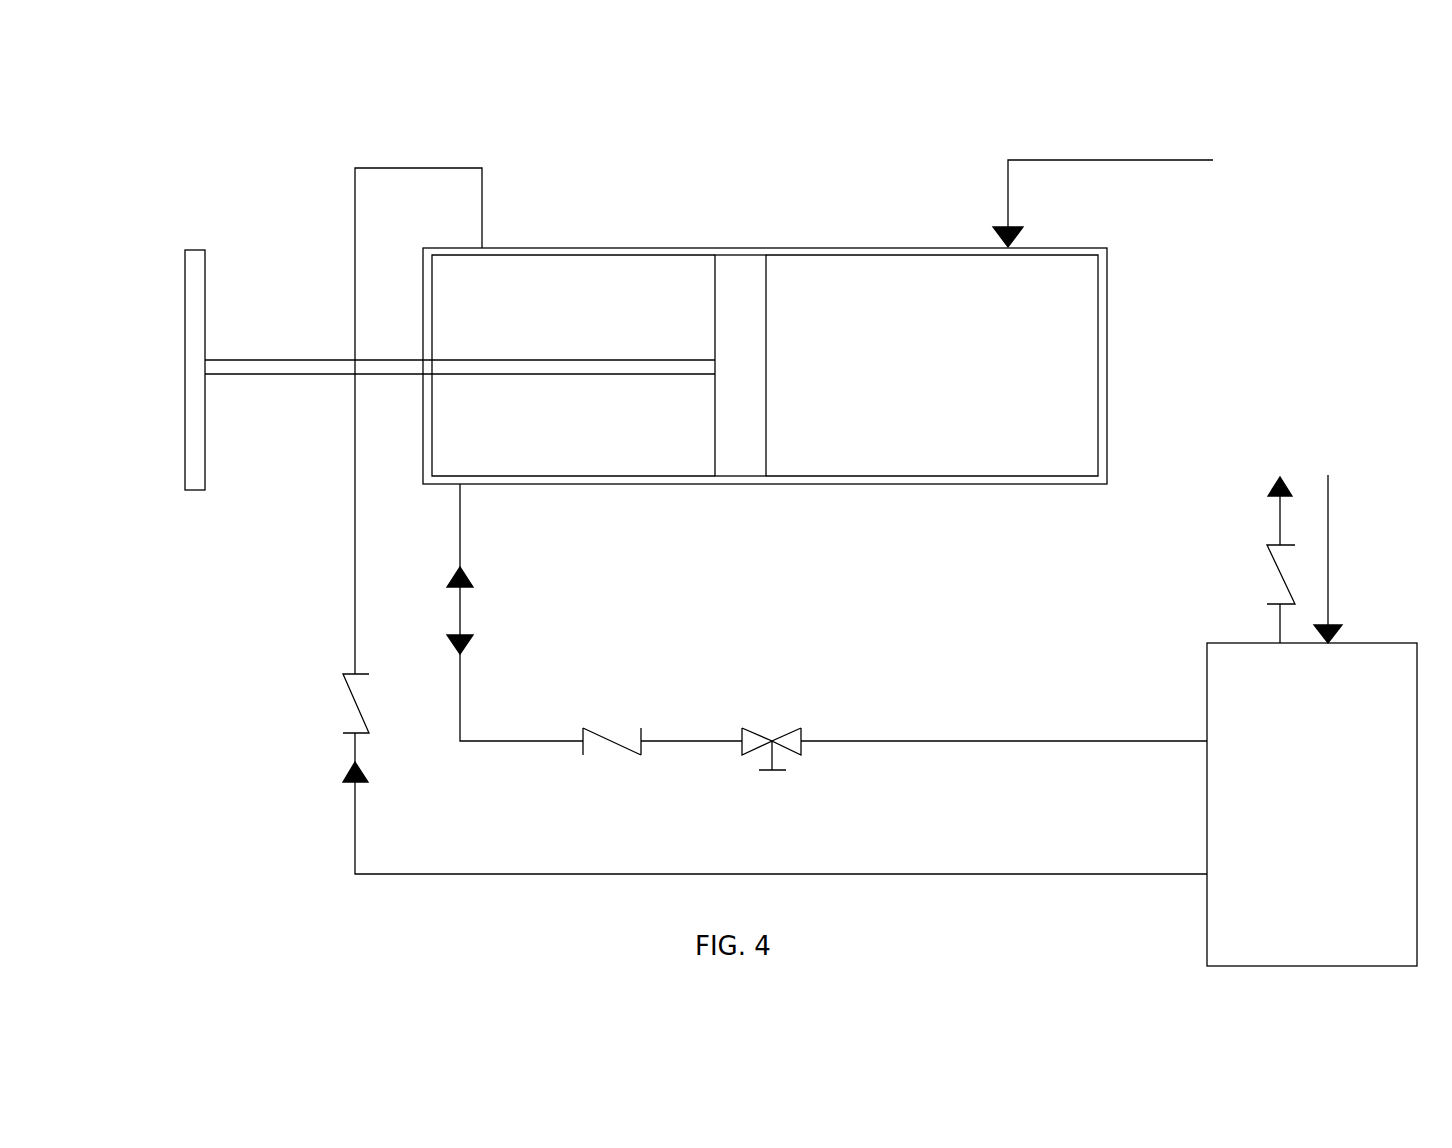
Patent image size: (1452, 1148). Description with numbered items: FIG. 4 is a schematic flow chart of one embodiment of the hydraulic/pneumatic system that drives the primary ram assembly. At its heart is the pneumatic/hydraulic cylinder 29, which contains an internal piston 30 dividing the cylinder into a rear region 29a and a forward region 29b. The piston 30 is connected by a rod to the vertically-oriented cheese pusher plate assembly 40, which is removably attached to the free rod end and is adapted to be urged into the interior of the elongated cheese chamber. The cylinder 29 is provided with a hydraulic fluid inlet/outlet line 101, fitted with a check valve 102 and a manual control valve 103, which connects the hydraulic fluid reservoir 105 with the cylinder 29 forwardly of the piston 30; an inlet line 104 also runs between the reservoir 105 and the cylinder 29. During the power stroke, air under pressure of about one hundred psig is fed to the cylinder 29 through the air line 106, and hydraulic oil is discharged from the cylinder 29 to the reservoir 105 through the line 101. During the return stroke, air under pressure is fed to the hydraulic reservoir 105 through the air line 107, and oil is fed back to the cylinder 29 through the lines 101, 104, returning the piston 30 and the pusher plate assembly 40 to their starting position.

The pneumatic/hydraulic cylinder 29 is at (787, 246).
The first chamber 29a is at (603, 295).
The second chamber 29b is at (923, 277).
The piston 30 is at (745, 283).
The cheese pusher plate assembly 40 is at (193, 250).
The hydraulic fluid inlet/outlet line 101 is at (923, 740).
The check valve 102 is at (603, 737).
The manual control valve 103 is at (765, 735).
The inlet line 104 is at (705, 874).
The hydraulic fluid reservoir 105 is at (1230, 660).
The air line 106 is at (1060, 160).
The air line 107 is at (1330, 568).